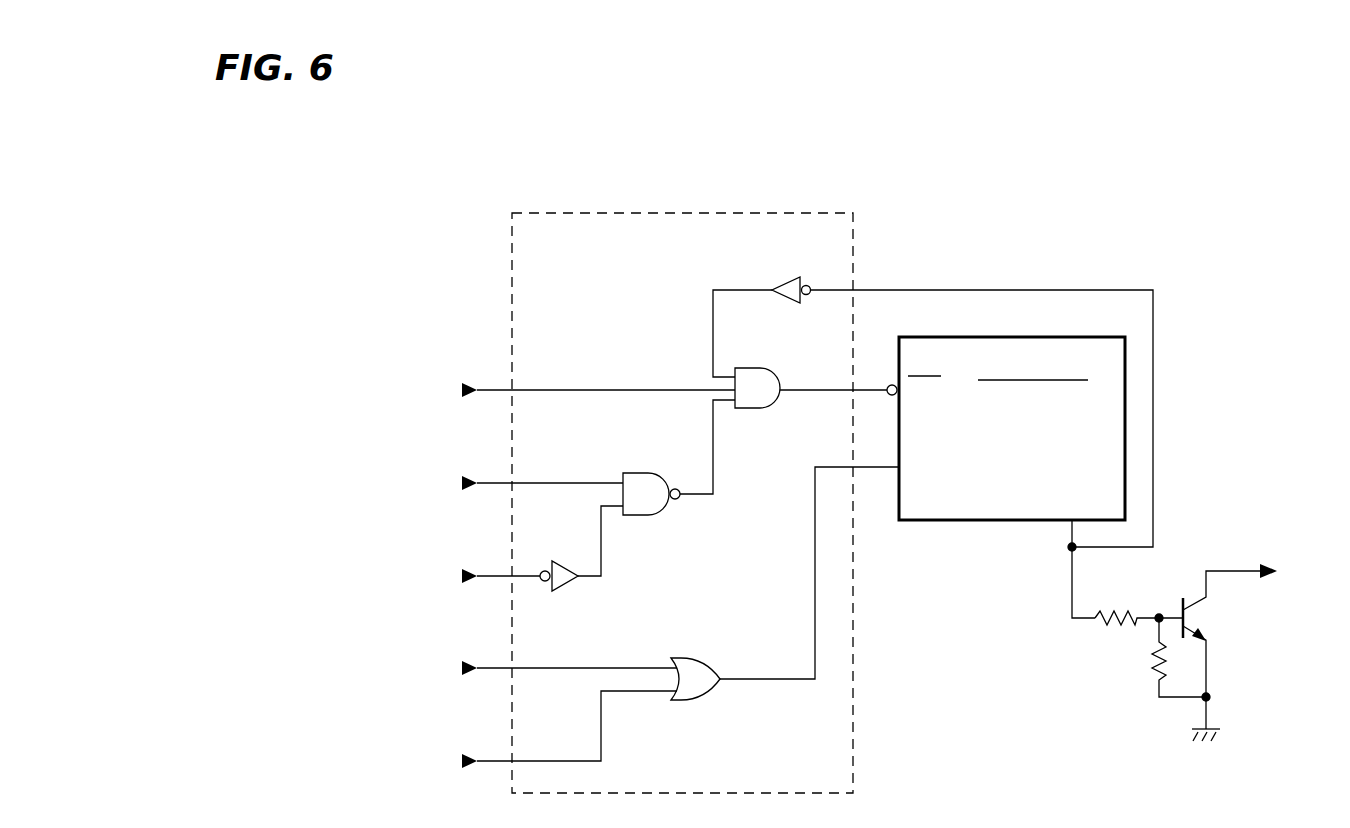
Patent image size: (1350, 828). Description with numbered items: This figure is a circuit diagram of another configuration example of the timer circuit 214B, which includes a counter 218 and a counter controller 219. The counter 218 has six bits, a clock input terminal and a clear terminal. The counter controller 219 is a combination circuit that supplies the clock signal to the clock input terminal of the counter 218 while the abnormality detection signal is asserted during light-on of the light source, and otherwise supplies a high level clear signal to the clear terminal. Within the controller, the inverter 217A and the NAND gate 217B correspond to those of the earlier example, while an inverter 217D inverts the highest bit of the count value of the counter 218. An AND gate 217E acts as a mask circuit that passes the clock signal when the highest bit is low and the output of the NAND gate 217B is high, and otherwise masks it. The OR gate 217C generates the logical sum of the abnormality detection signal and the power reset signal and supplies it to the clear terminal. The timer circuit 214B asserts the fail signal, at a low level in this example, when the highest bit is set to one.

The timer circuit 214B is at (1322, 146).
The counter controller 219 is at (680, 213).
The inverter 217A is at (572, 590).
The NAND gate 217B is at (648, 517).
The OR gate 217C is at (693, 702).
The inverter 217D is at (782, 281).
The AND gate 217E is at (760, 410).
The counter 218 is at (957, 522).